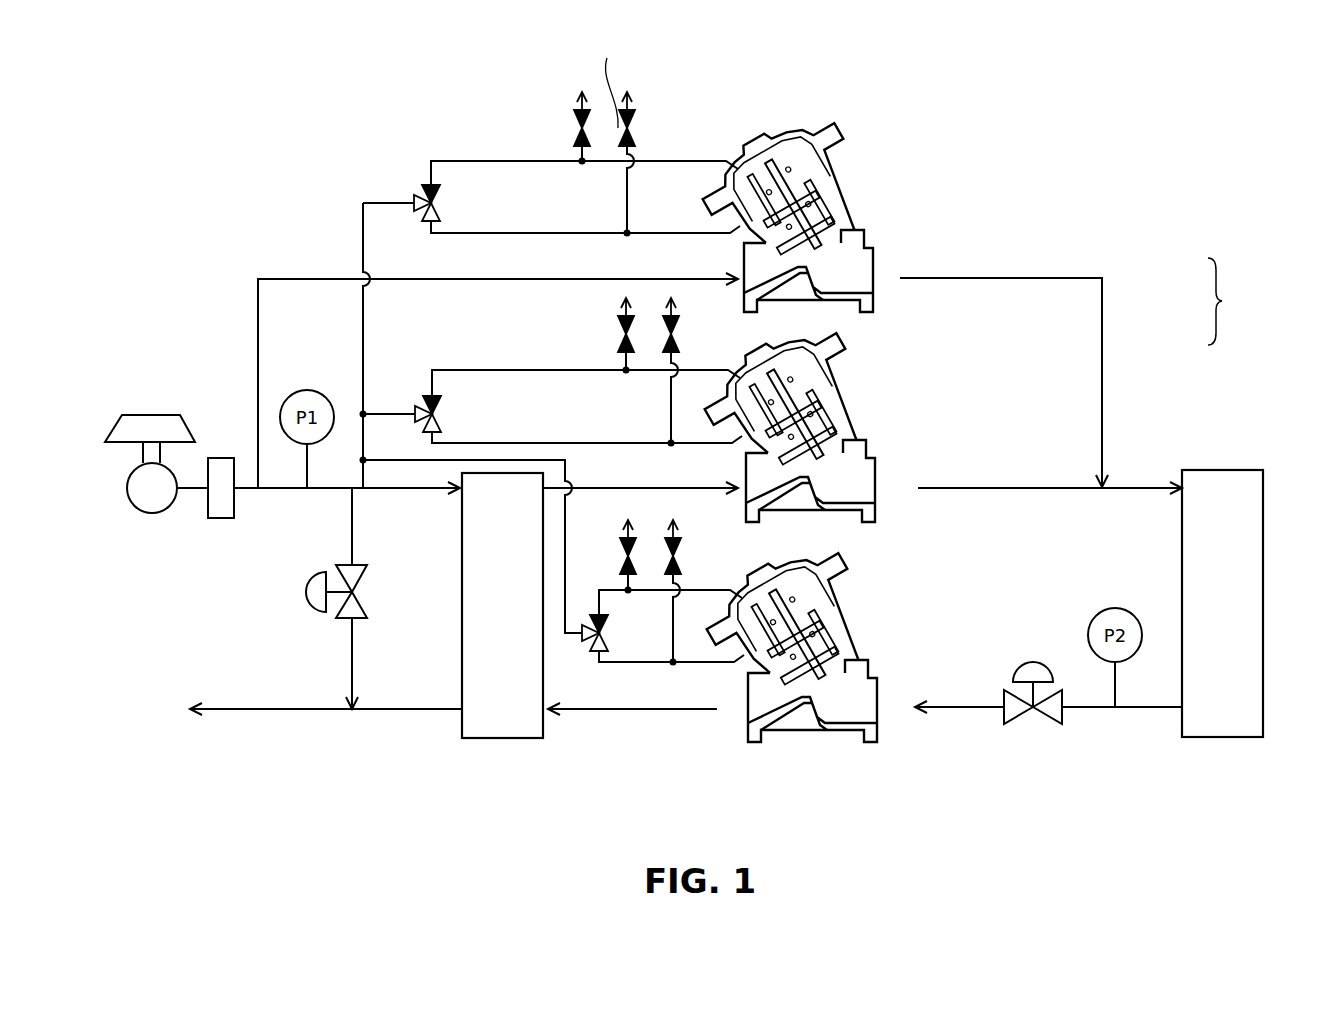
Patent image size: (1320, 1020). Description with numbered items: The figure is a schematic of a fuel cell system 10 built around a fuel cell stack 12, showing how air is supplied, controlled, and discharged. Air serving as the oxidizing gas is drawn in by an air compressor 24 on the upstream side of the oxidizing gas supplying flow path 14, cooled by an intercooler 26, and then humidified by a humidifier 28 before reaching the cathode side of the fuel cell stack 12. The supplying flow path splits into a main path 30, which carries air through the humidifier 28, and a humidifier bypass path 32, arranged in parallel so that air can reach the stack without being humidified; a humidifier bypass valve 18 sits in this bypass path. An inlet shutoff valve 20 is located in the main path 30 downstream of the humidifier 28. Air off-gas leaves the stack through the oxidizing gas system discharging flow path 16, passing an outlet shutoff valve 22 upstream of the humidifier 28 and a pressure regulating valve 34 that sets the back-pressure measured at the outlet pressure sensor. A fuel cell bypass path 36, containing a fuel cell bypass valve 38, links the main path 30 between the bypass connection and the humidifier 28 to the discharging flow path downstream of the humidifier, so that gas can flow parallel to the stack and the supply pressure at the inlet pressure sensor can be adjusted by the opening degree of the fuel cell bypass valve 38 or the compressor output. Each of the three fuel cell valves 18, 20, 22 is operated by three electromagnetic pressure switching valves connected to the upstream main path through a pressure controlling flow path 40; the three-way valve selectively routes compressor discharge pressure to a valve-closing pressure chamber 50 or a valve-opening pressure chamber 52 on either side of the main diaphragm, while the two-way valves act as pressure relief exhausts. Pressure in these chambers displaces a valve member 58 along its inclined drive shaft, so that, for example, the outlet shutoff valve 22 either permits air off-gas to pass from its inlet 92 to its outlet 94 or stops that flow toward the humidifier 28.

The fuel cell system 10 is at (1034, 149).
The fuel cell stack 12 is at (1222, 470).
The oxidizing gas supplying flow path 14 is at (1079, 376).
The oxidizing gas system discharging flow path 16 is at (968, 710).
The humidifier bypass valve 18 is at (820, 192).
The inlet shutoff valve 20 is at (815, 350).
The outlet shutoff valve 22 is at (835, 545).
The air compressor 24 is at (136, 513).
The intercooler 26 is at (225, 518).
The humidifier 28 is at (500, 740).
The main path 30 is at (1030, 487).
The humidifier bypass path 32 is at (1102, 310).
The pressure regulating valve 34 is at (1020, 713).
The fuel cell bypass path 36 is at (346, 653).
The fuel cell bypass valve 38 is at (367, 578).
The pressure controlling flow path 40 is at (668, 233).
The valve-closing pressure chamber 50 is at (788, 195).
The valve-opening pressure chamber 52 is at (791, 199).
The valve member 58 is at (790, 208).
The inlet 92 is at (783, 271).
The outlet 94 is at (847, 288).